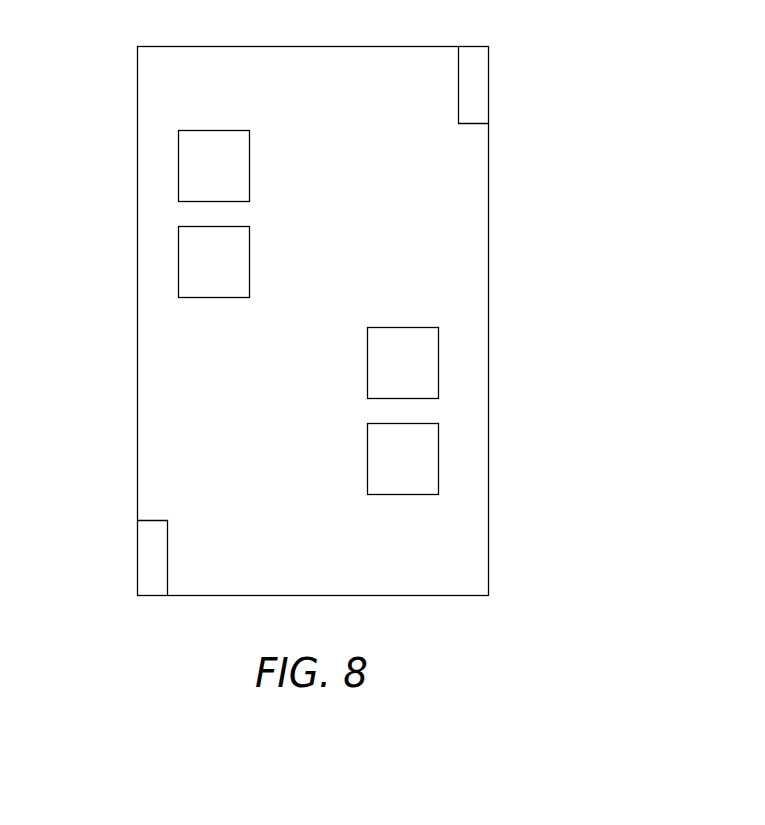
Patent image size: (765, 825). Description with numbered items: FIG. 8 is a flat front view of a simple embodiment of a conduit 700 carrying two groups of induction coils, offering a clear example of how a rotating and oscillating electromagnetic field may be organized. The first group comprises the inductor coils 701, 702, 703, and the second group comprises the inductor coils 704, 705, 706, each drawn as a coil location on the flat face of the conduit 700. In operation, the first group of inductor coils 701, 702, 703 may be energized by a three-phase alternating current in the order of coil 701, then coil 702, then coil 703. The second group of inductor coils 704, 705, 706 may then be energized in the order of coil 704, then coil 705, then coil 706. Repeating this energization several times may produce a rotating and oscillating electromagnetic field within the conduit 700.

The substrate body 700 is at (313, 321).
The inductor coil 701 is at (151, 564).
The inductor coil 702 is at (428, 455).
The inductor coil 703 is at (427, 377).
The inductor coil 704 is at (195, 255).
The inductor coil 705 is at (198, 169).
The inductor coil 706 is at (478, 88).